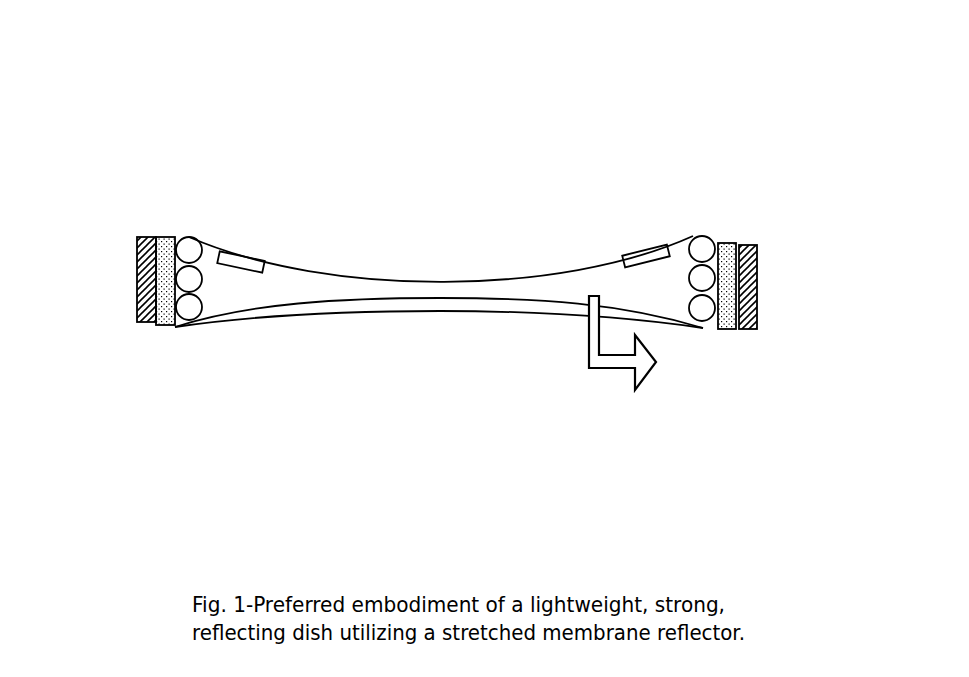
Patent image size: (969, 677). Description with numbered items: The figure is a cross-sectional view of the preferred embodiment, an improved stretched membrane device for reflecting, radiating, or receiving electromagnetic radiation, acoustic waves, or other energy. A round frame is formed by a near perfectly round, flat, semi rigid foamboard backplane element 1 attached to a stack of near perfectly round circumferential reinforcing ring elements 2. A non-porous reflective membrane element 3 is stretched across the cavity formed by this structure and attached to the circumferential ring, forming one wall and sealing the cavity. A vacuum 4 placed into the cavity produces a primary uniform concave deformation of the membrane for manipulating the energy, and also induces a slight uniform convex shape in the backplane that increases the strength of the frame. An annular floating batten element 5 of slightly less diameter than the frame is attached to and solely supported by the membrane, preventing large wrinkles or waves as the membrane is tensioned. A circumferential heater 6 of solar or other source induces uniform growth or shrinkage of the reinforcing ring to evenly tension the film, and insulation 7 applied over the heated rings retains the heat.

The semi rigid foamboard backplane element 1 is at (429, 343).
The stack of circumferential reinforcing ring elements 2 is at (194, 343).
The reflective membrane element 3 is at (428, 240).
The vacuum 4 is at (718, 347).
The annular floating batten element 5 is at (656, 222).
The circumferential heater 6 is at (175, 211).
The insulation 7 is at (118, 244).